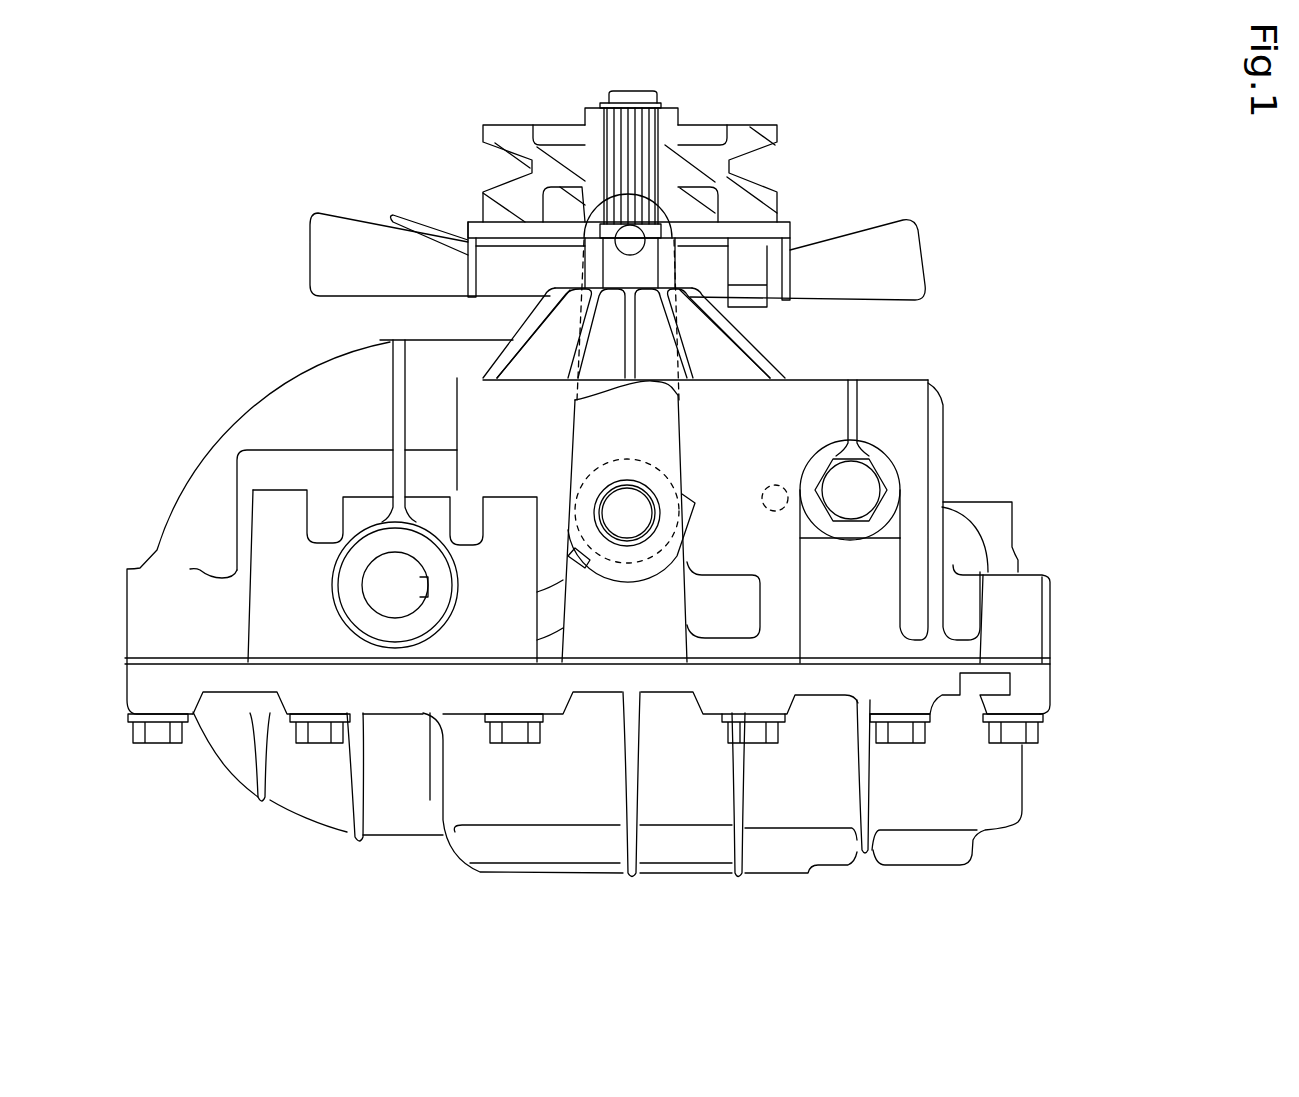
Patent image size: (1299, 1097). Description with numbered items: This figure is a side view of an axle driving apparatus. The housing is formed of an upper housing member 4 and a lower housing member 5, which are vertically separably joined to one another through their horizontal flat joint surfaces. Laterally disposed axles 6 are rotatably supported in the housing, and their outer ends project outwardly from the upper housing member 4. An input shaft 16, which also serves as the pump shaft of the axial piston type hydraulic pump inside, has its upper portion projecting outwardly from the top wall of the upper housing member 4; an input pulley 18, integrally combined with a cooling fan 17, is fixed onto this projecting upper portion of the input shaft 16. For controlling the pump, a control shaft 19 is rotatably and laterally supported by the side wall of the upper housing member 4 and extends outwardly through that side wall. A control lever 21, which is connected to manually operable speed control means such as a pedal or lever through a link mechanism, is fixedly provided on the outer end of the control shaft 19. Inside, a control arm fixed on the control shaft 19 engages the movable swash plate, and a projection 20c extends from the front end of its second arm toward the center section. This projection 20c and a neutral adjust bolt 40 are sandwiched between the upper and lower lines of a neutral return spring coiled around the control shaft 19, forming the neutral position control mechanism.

The upper housing member 4 is at (920, 390).
The lower housing member 5 is at (1012, 820).
The axle 6 is at (367, 595).
The input shaft 16 is at (625, 96).
The cooling fan 17 is at (318, 222).
The input pulley 18 is at (490, 193).
The control shaft 19 is at (640, 497).
The projection 20c is at (780, 483).
The control lever 21 is at (577, 422).
The neutral adjust bolt 40 is at (860, 480).